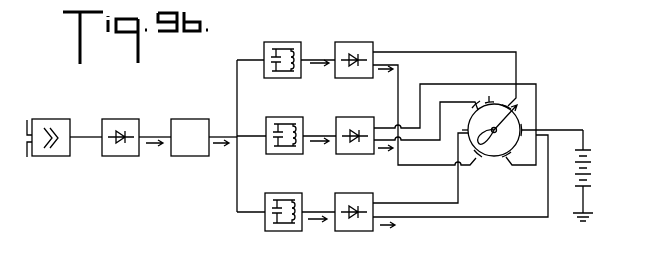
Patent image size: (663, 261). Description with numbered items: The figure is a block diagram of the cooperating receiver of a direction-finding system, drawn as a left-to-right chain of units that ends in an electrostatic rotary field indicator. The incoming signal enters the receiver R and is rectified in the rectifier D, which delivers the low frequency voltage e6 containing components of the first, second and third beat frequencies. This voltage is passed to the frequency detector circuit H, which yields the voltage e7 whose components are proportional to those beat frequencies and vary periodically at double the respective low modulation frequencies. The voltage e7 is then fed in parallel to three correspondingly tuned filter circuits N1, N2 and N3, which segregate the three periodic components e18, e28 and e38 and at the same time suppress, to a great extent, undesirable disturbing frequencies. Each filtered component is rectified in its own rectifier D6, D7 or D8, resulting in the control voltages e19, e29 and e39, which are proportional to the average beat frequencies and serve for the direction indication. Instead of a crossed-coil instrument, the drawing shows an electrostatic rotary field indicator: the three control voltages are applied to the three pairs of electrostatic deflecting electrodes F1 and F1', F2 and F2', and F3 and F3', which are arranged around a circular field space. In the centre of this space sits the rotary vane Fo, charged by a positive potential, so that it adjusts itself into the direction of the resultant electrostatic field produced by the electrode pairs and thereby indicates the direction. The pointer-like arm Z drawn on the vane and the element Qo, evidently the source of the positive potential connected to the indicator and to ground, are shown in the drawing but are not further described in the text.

The receiver R is at (46, 119).
The rectifier D is at (116, 119).
The frequency detector circuit H is at (195, 119).
The tuned filter circuit N1 is at (288, 184).
The tuned filter circuit N2 is at (280, 118).
The tuned filter circuit N3 is at (280, 43).
The rectifier D6 is at (364, 184).
The rectifier D7 is at (351, 118).
The rectifier D8 is at (350, 43).
The low frequency voltage e6 is at (154, 151).
The frequency detector output voltage e7 is at (221, 151).
The first periodic component e18 is at (317, 227).
The first control voltage e19 is at (387, 232).
The second periodic component e28 is at (319, 149).
The second control voltage e29 is at (385, 155).
The third periodic component e38 is at (319, 71).
The third control voltage e39 is at (385, 76).
The rotary vane Fo is at (494, 130).
The switch arm Z is at (524, 101).
The electrostatic deflecting electrode F1 is at (465, 108).
The electrostatic deflecting electrode F2 is at (505, 166).
The electrostatic deflecting electrode F3 is at (505, 99).
The electrostatic deflecting electrode F1' is at (552, 140).
The electrostatic deflecting electrode F2' is at (487, 95).
The electrostatic deflecting electrode F3' is at (478, 165).
The battery Qo is at (586, 148).